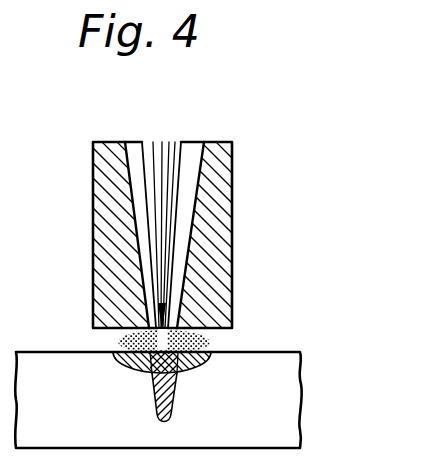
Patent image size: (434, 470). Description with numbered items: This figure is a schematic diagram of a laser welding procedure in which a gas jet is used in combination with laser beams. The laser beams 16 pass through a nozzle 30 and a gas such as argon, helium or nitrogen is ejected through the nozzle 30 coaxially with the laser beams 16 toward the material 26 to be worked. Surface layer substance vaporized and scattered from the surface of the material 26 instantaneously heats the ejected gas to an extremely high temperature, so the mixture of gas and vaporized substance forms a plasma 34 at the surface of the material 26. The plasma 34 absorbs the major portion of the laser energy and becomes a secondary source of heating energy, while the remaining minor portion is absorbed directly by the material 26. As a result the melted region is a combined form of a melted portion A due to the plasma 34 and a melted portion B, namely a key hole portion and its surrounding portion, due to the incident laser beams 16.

The laser beams 16 is at (168, 166).
The nozzle 30 is at (106, 203).
The plasma 34 is at (193, 328).
The material to be worked 26 is at (300, 352).
The melted portion due to the plasma A is at (128, 367).
The melted portion due to the incident laser beams B is at (174, 402).